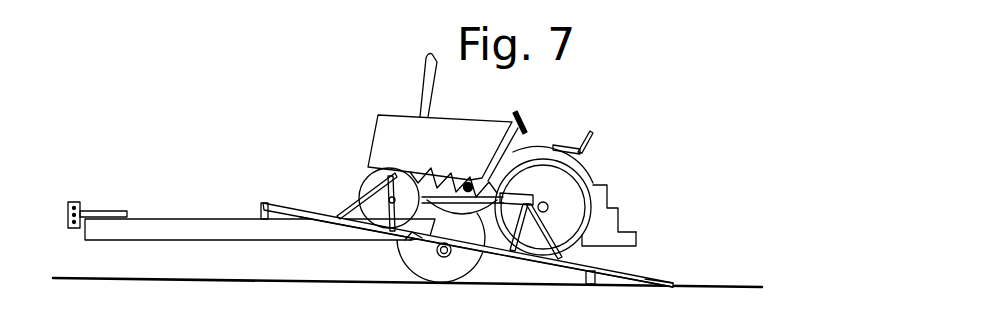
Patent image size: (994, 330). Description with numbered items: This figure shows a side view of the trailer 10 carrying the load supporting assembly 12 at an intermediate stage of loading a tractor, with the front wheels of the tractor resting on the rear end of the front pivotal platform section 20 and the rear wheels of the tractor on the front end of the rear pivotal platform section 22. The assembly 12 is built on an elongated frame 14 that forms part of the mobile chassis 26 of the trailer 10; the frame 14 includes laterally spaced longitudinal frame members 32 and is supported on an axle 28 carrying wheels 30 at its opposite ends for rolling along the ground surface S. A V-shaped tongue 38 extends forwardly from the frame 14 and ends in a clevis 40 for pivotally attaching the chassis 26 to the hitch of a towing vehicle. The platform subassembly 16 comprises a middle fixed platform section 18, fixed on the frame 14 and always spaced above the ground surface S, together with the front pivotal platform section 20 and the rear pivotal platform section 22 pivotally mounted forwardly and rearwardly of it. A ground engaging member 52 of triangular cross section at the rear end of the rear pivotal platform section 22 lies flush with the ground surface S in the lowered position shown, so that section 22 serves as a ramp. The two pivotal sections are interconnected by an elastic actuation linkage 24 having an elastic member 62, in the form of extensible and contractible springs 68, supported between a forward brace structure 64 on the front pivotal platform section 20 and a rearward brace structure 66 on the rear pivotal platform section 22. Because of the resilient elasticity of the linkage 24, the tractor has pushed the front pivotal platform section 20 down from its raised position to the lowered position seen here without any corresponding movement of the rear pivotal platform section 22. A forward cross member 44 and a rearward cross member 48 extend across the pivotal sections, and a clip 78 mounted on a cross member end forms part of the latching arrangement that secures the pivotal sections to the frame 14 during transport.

The trailer 10 is at (157, 140).
The load supporting assembly 12 is at (313, 183).
The elongated frame 14 is at (297, 224).
The platform subassembly 16 is at (532, 268).
The middle fixed platform section 18 is at (398, 233).
The front pivotal platform section 20 is at (275, 203).
The rear pivotal platform section 22 is at (617, 267).
The elastic actuation linkage 24 is at (419, 162).
The mobile chassis 26 is at (617, 225).
The axle 28 is at (446, 257).
The wheel 30 is at (412, 257).
The longitudinal frame member 32 is at (623, 235).
The V-shaped tongue 38 is at (110, 231).
The clevis 40 is at (67, 202).
The forward cross member 44 is at (258, 212).
The rearward cross member 48 is at (590, 284).
The ground engaging member 52 is at (647, 285).
The elastic member 62 is at (495, 174).
The forward brace structure 64 is at (362, 194).
The rearward brace structure 66 is at (583, 182).
The spring 68 is at (418, 177).
The clip 78 is at (475, 178).
The ground surface S is at (727, 283).